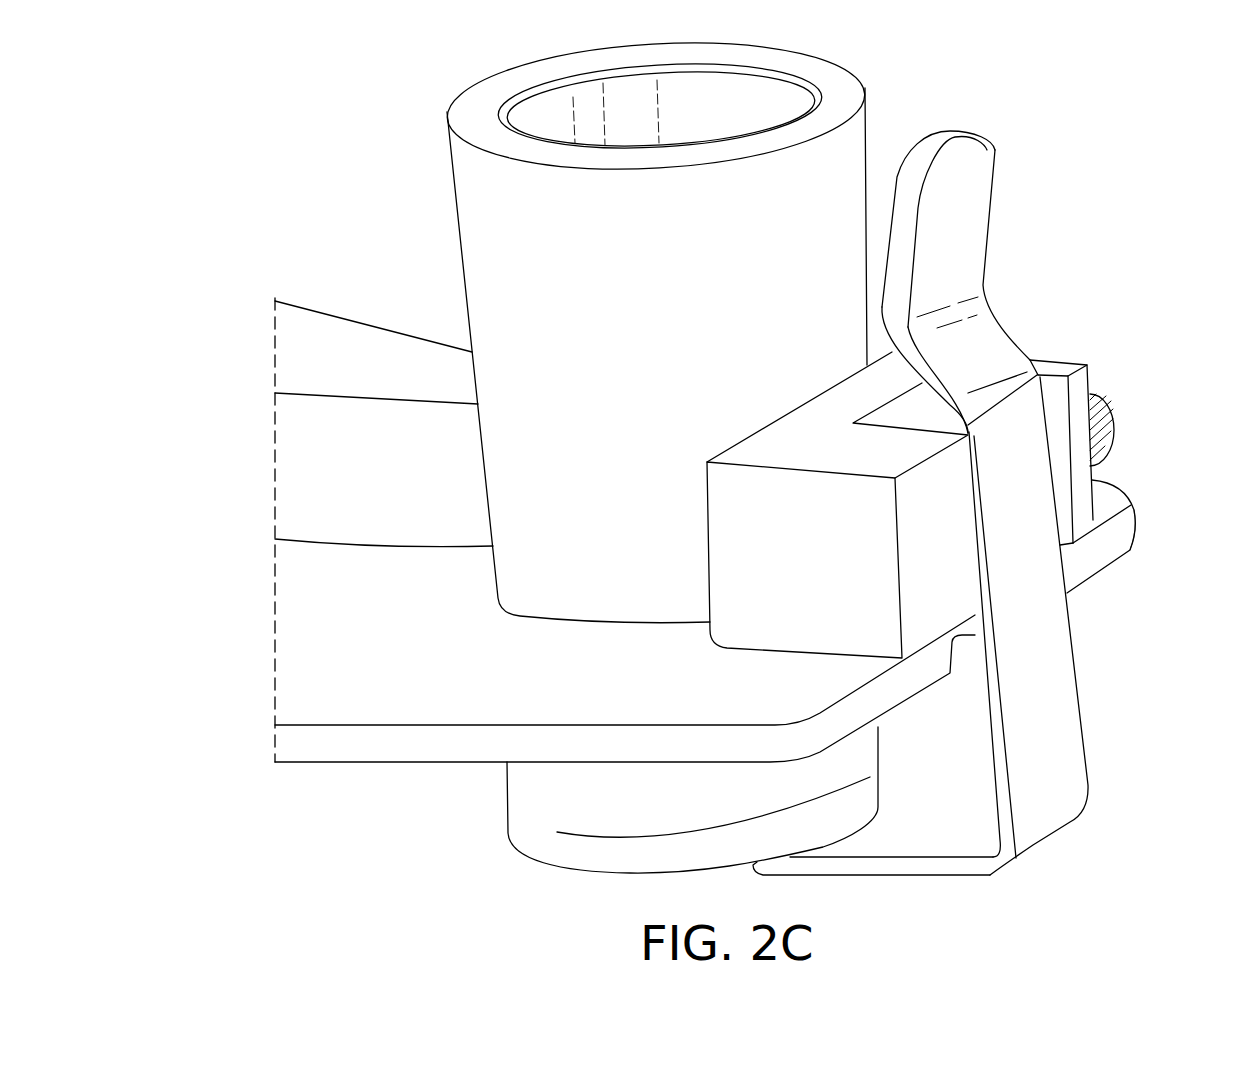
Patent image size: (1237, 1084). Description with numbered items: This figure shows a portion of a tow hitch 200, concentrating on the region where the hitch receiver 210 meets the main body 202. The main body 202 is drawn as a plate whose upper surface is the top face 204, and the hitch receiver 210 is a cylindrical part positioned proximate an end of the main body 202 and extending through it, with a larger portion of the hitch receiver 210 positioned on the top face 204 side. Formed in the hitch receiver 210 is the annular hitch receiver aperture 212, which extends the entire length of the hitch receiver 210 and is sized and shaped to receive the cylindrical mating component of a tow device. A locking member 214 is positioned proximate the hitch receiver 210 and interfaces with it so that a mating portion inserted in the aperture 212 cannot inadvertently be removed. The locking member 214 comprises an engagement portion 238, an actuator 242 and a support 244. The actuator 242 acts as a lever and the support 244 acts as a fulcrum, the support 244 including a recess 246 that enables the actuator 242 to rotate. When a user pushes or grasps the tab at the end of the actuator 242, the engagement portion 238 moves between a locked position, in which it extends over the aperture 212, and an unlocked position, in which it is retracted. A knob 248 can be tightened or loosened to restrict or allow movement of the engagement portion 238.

The tow hitch 200 is at (1130, 168).
The main body 202 is at (333, 753).
The top face 204 is at (433, 669).
The hitch receiver 210 is at (462, 218).
The hitch receiver aperture 212 is at (530, 120).
The locking member 214 is at (1142, 475).
The engagement portion 238 is at (935, 867).
The actuator 242 is at (958, 200).
The support 244 is at (1080, 362).
The recess 246 is at (1053, 387).
The knob 248 is at (1107, 428).